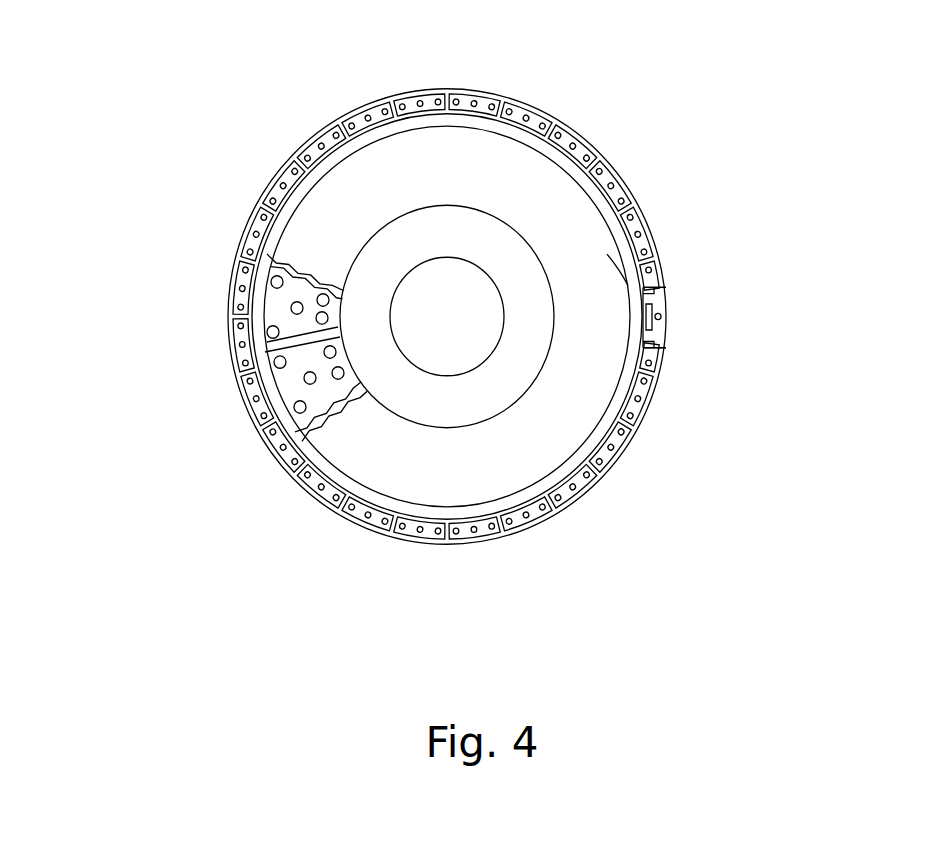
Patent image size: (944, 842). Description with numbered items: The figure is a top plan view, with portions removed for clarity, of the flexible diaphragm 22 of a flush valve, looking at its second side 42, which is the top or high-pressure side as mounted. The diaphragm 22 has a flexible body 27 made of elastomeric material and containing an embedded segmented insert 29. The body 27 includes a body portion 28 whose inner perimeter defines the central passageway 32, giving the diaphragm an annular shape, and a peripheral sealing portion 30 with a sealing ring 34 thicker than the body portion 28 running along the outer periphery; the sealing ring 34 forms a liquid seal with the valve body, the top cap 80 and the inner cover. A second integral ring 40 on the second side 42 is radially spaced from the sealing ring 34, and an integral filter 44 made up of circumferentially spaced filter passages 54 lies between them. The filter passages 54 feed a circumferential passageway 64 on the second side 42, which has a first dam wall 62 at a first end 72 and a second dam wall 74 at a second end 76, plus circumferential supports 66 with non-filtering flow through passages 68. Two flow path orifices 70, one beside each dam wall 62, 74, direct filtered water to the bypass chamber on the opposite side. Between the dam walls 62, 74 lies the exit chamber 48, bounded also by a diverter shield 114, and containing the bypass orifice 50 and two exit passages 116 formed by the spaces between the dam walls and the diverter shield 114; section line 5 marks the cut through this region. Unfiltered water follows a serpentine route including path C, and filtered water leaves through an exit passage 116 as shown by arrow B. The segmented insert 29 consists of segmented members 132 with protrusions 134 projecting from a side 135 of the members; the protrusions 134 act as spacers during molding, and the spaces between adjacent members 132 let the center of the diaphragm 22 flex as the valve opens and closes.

The flexible diaphragm 22 is at (256, 165).
The flexible body 27 is at (546, 103).
The body portion 28 is at (374, 256).
The segmented insert 29 is at (256, 333).
The peripheral sealing portion 30 is at (300, 470).
The central passageway 32 is at (447, 316).
The sealing ring 34 is at (546, 540).
The second integral ring 40 is at (592, 404).
The second side 42 is at (372, 182).
The integral filter 44 is at (557, 112).
The exit chamber 48 is at (668, 325).
The bypass orifice 50 is at (668, 298).
The filter passages 54 is at (652, 204).
The first dam wall 62 is at (612, 372).
The circumferential passageway 64 is at (612, 440).
The circumferential supports 66 is at (604, 150).
The flow through passages 68 is at (604, 488).
The flow path orifice 70 is at (650, 268).
The first end 72 is at (658, 350).
The second dam wall 74 is at (618, 252).
The second end 76 is at (666, 292).
The top cap 80 is at (483, 522).
The diverter shield 114 is at (640, 318).
The exit passages 116 is at (640, 300).
The segmented members 132 is at (280, 297).
The protrusions 134 is at (292, 308).
The side 135 is at (322, 388).
The section line 5- 5 is at (173, 313).
The arrow B is at (630, 292).
The path C is at (207, 342).